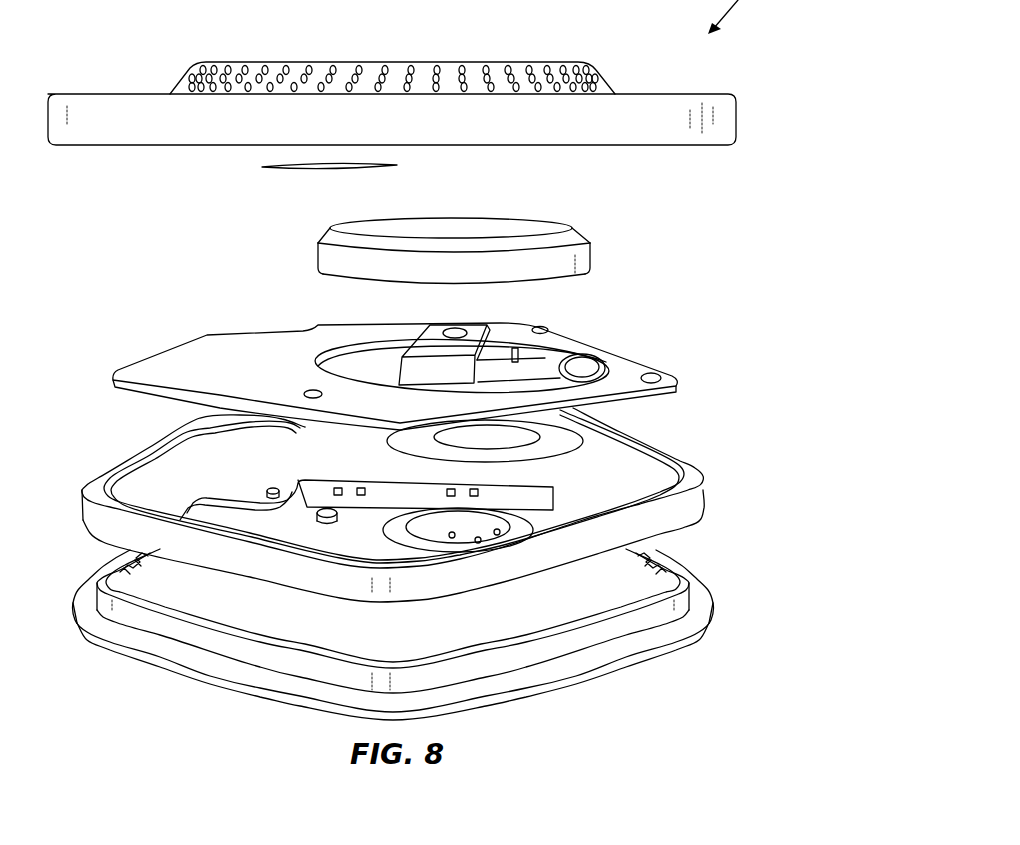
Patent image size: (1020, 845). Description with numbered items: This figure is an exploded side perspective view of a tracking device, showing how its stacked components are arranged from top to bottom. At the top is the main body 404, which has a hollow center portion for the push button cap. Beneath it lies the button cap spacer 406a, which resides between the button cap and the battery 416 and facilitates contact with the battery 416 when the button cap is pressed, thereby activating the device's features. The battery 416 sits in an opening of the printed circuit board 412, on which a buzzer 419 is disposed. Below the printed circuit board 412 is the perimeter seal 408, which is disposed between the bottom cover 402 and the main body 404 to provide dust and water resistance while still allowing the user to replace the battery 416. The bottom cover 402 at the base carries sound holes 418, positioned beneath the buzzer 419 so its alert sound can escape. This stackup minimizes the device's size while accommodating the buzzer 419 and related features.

The bottom cover 402 is at (708, 600).
The main body 404 is at (703, 121).
The button cap spacer 406a is at (262, 167).
The perimeter seal 408 is at (680, 518).
The printed circuit board 412 is at (620, 367).
The battery 416 is at (560, 265).
The sound holes 418 is at (480, 518).
The buzzer 419 is at (567, 428).